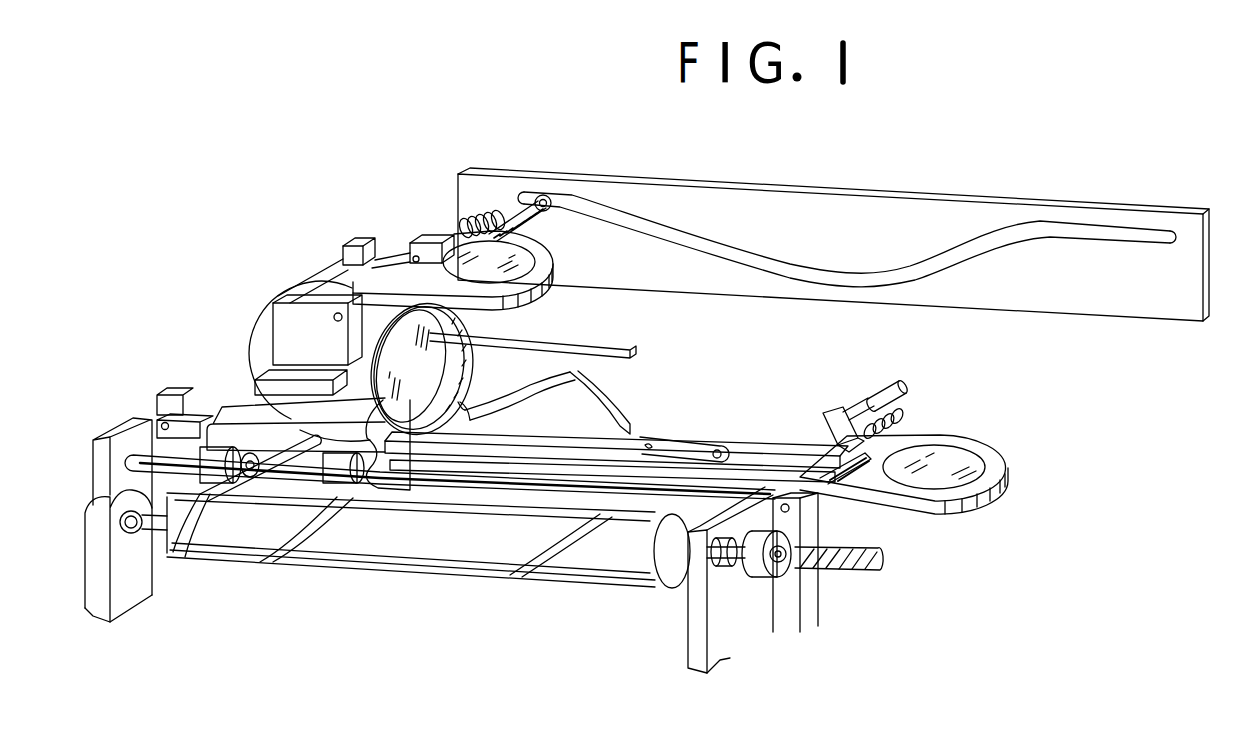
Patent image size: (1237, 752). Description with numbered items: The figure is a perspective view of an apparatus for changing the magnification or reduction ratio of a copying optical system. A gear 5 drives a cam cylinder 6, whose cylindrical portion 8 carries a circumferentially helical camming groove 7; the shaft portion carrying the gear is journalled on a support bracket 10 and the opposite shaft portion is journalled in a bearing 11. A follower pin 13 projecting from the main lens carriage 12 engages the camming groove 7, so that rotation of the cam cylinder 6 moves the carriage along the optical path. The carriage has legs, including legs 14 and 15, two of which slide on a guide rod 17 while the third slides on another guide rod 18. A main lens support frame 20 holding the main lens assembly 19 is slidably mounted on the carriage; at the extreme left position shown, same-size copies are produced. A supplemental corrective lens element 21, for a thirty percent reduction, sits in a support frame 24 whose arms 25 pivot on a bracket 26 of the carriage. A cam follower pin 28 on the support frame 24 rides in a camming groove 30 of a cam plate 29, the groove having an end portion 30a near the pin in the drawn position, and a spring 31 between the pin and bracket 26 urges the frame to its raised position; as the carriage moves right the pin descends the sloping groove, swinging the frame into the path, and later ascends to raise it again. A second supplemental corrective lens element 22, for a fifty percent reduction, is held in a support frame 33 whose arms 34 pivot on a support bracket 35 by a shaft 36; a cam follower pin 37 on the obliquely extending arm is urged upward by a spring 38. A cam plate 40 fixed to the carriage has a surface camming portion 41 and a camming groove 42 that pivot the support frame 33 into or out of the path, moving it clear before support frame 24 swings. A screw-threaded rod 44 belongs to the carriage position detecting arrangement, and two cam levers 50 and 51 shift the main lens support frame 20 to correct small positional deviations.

The gear 5 is at (758, 578).
The cam cylinder 6 is at (393, 573).
The camming groove 7 is at (536, 555).
The cylindrical portion 8 is at (597, 548).
The support bracket 10 is at (697, 633).
The bearing 11 is at (128, 582).
The main lens carriage 12 is at (262, 345).
The follower pin 13 is at (260, 478).
The leg 14 is at (218, 460).
The leg 15 is at (348, 472).
The guide rod 17 is at (505, 477).
The guide rod 18 is at (768, 428).
The main lens assembly 19 is at (432, 347).
The main lens support frame 20 is at (450, 378).
The supplemental corrective lens element 21 is at (522, 262).
The supplemental corrective lens element 22 is at (968, 458).
The support frame 24 is at (342, 252).
The arms 25 is at (425, 236).
The bracket 26 is at (282, 322).
The cam follower pin 28 is at (556, 198).
The cam plate 29 is at (977, 221).
The camming groove 30 is at (896, 272).
The slot end 30a is at (518, 193).
The spring 31 is at (478, 216).
The support frame 33 is at (988, 488).
The arms 34 is at (827, 407).
The support bracket 35 is at (813, 585).
The shaft 36 is at (788, 511).
The cam follower pin 37 is at (903, 382).
The spring 38 is at (900, 430).
The cam plate 40 is at (587, 338).
The surface camming portion 41 is at (594, 402).
The camming groove 42 is at (520, 385).
The screw-threaded rod 44 is at (882, 558).
The cam lever 50 is at (683, 450).
The cam lever 51 is at (785, 458).